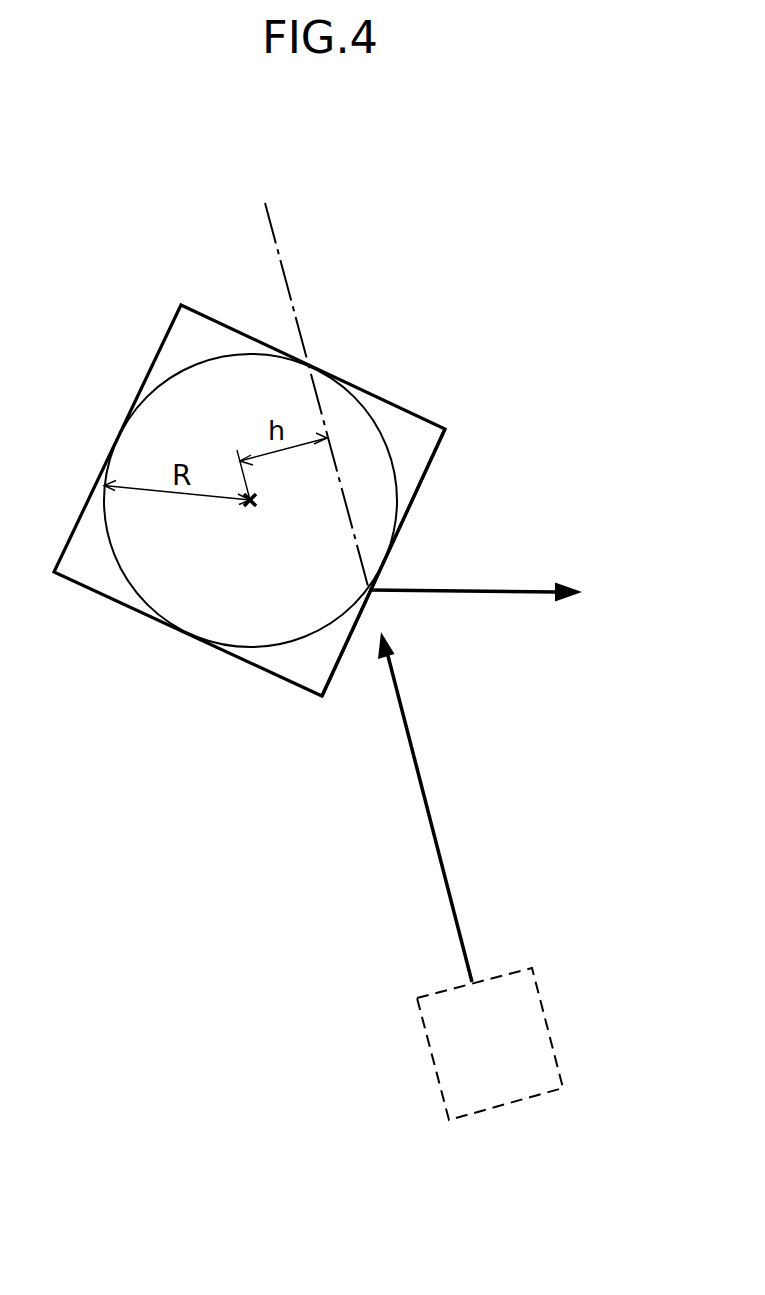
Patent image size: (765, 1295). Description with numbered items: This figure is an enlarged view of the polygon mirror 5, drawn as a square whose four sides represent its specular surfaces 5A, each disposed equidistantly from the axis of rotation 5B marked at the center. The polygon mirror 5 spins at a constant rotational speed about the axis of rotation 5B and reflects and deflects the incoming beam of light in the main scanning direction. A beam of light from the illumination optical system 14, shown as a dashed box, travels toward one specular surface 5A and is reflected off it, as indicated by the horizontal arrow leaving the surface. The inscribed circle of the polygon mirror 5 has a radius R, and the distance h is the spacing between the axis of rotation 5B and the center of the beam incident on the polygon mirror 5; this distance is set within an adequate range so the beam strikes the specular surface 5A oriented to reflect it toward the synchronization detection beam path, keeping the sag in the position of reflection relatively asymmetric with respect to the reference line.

The polygon mirror 5 is at (177, 338).
The specular surface 5A is at (423, 478).
The axis of rotation 5B is at (248, 511).
The illumination optical system 14 is at (542, 993).